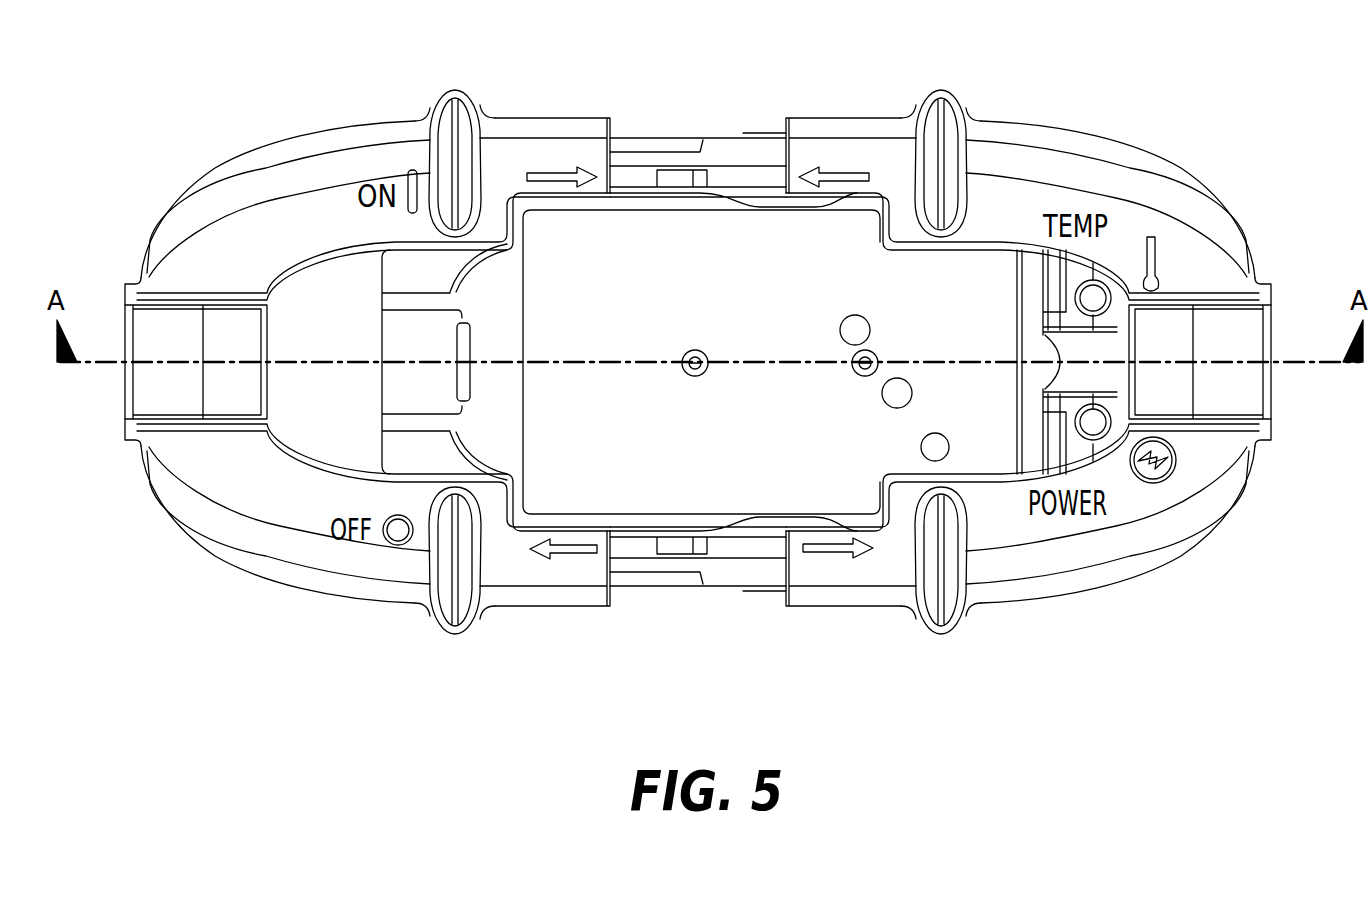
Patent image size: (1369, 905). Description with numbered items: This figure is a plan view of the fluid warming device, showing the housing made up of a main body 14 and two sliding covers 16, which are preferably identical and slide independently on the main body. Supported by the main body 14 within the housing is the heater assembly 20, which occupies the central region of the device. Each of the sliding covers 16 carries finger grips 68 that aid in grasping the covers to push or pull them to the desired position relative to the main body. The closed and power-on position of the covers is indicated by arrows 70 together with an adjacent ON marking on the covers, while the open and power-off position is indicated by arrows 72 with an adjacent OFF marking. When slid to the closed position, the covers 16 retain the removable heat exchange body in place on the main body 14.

The main body 14 is at (733, 150).
The sliding covers 16 is at (218, 183).
The heater assembly 20 is at (720, 476).
The finger grips 68 is at (455, 90).
The arrows 70 is at (557, 168).
The arrows 72 is at (562, 562).